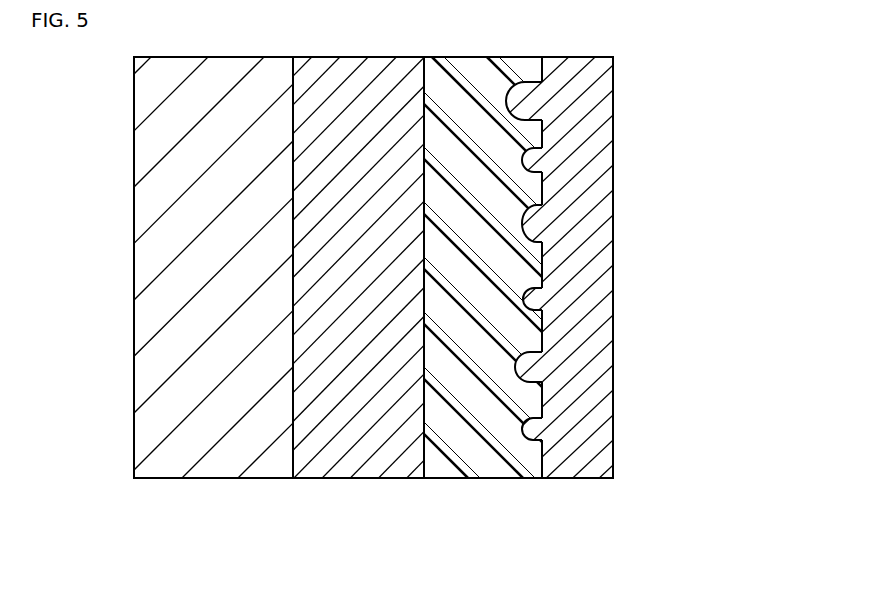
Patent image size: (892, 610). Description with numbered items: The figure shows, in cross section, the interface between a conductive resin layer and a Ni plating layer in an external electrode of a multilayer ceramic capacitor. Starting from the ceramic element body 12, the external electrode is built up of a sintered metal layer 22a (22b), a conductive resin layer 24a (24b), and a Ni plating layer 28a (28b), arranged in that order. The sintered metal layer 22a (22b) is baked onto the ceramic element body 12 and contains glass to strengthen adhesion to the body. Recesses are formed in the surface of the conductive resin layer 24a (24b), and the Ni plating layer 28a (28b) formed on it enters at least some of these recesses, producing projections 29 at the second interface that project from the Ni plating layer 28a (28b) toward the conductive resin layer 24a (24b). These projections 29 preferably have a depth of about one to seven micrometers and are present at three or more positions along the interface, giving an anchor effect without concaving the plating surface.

The ceramic element body 12 is at (168, 462).
The sintered metal layer 22a is at (409, 301).
The sintered metal layer 22b is at (360, 440).
The conductive resin layer 24a is at (446, 313).
The conductive resin layer 24b is at (483, 458).
The Ni plating layer 28a is at (494, 297).
The Ni plating layer 28b is at (582, 440).
The projections 29 is at (536, 97).